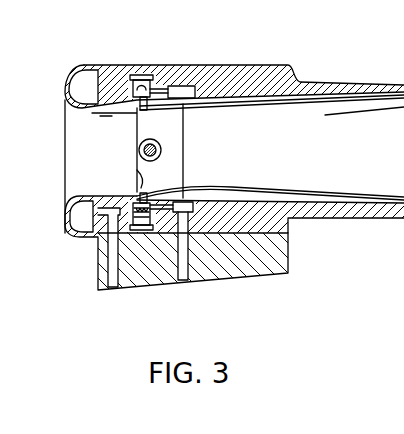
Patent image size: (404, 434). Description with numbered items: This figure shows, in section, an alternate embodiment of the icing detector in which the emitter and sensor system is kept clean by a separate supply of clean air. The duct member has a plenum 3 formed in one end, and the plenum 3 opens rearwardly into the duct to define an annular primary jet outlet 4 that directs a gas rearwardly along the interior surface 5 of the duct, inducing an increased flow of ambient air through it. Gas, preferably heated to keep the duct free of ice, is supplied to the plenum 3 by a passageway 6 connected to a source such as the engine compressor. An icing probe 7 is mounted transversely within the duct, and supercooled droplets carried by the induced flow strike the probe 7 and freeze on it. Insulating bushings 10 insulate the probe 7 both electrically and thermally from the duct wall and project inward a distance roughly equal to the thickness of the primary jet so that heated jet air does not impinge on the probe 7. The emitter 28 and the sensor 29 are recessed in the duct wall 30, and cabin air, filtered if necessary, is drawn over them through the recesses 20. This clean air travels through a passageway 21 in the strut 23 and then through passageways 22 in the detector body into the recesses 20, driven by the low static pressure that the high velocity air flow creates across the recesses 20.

The plenum 3 is at (82, 80).
The annular primary jet outlet 4 is at (138, 176).
The interior surface 5 is at (283, 97).
The passageway 6 is at (113, 270).
The icing probe 7 is at (163, 153).
The insulating bushing 10 is at (146, 138).
The recess 20 is at (143, 101).
The passageway 21 is at (182, 274).
The passageway 22 is at (164, 76).
The strut 23 is at (290, 258).
The emitter 28 is at (142, 78).
The sensor 29 is at (140, 228).
The duct wall 30 is at (185, 72).